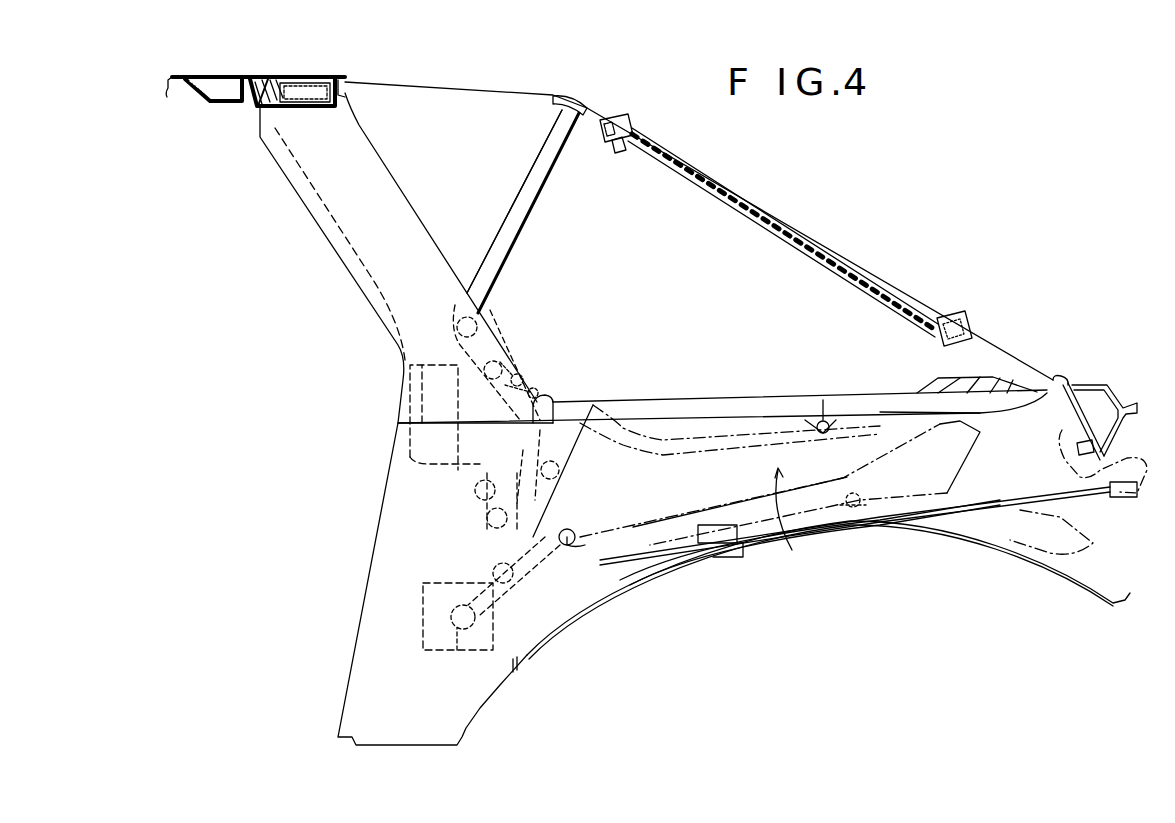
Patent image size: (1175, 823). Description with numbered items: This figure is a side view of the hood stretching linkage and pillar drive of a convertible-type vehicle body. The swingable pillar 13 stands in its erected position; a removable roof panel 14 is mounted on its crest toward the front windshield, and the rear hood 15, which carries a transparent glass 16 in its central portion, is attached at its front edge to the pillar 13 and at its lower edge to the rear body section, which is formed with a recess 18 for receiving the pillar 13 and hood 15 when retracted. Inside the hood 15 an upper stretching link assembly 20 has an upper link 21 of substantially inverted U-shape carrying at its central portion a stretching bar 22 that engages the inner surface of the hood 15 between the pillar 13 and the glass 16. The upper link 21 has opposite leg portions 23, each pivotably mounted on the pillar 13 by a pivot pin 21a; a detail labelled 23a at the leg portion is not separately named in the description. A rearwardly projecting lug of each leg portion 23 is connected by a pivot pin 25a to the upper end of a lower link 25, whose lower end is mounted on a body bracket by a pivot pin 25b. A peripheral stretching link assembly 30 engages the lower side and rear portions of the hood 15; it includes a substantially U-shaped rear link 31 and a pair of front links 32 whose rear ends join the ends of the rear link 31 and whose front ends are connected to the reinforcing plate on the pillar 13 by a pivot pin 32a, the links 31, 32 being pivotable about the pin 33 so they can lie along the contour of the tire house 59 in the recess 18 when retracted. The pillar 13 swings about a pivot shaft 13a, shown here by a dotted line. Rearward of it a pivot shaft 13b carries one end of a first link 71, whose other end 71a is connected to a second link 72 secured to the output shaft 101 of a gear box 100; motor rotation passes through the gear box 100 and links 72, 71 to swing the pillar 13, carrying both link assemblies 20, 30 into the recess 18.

The swingable pillar 13 is at (402, 215).
The pivot shaft 13a is at (473, 490).
The pivot shaft 13b is at (562, 470).
The roof panel 14 is at (214, 78).
The rear hood 15 is at (512, 88).
The transparent glass 16 is at (792, 212).
The recess 18 is at (785, 520).
The upper stretching link assembly 20 is at (512, 182).
The upper link 21 is at (538, 208).
The pivot pin 21a is at (490, 306).
The stretching bar 22 is at (580, 99).
The leg portions 23 is at (500, 338).
The bracket bolt 23a is at (518, 352).
The lower link 25 is at (540, 378).
The pivot pin 25a is at (522, 370).
The pivot pin 25b is at (486, 520).
The peripheral stretching link assembly 30 is at (790, 379).
The rear link 31 is at (895, 385).
The front links 32 is at (720, 392).
The pivot pin 32a is at (548, 393).
The pin 33 is at (830, 410).
The tire house 59 is at (614, 596).
The first link 71 is at (540, 580).
The other end of first link 71a is at (490, 565).
The second link 72 is at (488, 618).
The gear box 100 is at (420, 625).
The output shaft 101 is at (447, 653).